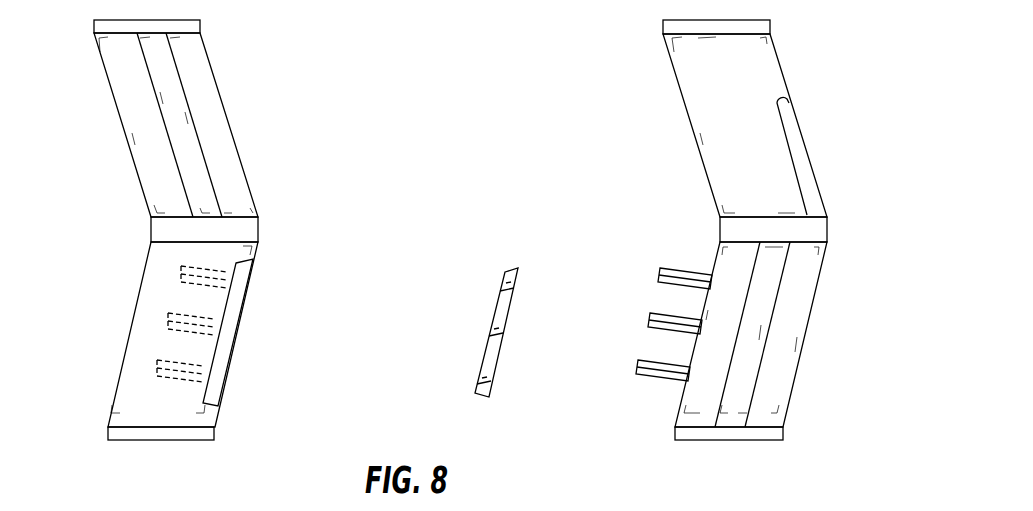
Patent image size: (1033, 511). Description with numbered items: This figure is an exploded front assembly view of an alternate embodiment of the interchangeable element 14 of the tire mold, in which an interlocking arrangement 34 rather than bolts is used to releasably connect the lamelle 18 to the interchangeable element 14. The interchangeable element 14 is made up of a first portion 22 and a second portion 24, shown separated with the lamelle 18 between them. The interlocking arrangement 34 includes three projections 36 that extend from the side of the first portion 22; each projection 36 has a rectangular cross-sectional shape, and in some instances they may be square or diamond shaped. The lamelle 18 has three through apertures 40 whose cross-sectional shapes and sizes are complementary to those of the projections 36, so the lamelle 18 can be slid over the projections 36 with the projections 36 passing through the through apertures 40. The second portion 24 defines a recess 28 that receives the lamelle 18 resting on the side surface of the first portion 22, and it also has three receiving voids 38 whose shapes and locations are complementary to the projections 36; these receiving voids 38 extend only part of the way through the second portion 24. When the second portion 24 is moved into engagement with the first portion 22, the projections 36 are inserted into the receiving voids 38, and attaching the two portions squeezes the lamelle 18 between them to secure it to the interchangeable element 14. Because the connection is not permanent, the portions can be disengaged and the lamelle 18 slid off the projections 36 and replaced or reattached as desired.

The interchangeable element 14 is at (783, 73).
The lamelle 18 is at (513, 270).
The first portion 22 is at (813, 173).
The second portion 24 is at (112, 98).
The recess 28 is at (240, 288).
The interlocking arrangement 34 is at (667, 265).
The projections 36 is at (675, 265).
The receiving voids 38 is at (180, 270).
The through apertures 40 is at (500, 285).